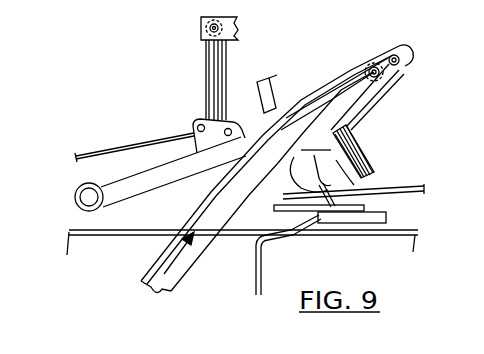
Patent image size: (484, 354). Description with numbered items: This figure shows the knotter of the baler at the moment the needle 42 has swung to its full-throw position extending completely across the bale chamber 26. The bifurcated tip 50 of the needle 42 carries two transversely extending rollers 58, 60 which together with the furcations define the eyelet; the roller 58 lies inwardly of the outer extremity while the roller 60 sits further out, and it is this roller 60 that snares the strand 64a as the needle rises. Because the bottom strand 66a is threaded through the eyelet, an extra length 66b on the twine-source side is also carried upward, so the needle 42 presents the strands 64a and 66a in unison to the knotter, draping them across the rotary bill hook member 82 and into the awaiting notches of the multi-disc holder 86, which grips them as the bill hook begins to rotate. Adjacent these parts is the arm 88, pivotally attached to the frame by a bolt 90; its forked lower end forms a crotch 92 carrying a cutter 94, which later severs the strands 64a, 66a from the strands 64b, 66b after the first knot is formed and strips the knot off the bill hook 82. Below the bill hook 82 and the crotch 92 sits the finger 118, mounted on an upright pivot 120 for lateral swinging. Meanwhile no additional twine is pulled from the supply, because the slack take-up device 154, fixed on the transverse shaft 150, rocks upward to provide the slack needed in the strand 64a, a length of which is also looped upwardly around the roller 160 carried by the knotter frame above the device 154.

The bale chamber 26 is at (415, 244).
The needle 42 is at (152, 290).
The tip 50 is at (420, 41).
The roller 58 is at (350, 62).
The roller 60 is at (412, 56).
The strand 64a is at (402, 189).
The strand 64b is at (402, 77).
The bottom strand 66a is at (255, 272).
The extra length of strand 66b is at (140, 277).
The rotary bill hook member 82 is at (293, 152).
The multi-disc holder 86 is at (357, 137).
The arm 88 is at (282, 85).
The bolt 90 is at (254, 105).
The crotch 92 is at (290, 196).
The cutter 94 is at (353, 185).
The finger 118 is at (300, 230).
The upright pivot 120 is at (357, 203).
The transverse shaft 150 is at (78, 192).
The slack take-up device 154 is at (151, 190).
The roller 160 is at (200, 26).